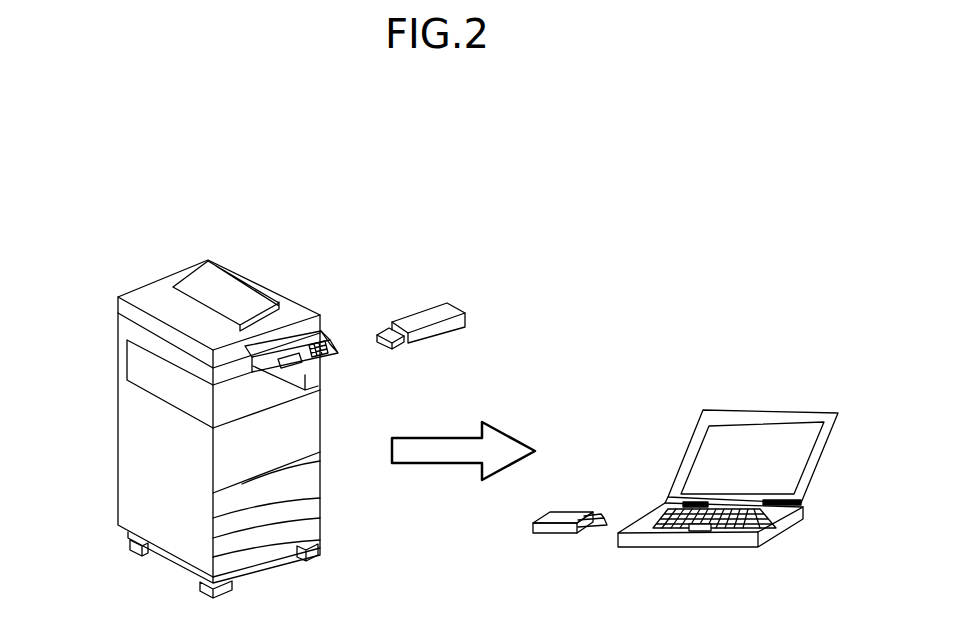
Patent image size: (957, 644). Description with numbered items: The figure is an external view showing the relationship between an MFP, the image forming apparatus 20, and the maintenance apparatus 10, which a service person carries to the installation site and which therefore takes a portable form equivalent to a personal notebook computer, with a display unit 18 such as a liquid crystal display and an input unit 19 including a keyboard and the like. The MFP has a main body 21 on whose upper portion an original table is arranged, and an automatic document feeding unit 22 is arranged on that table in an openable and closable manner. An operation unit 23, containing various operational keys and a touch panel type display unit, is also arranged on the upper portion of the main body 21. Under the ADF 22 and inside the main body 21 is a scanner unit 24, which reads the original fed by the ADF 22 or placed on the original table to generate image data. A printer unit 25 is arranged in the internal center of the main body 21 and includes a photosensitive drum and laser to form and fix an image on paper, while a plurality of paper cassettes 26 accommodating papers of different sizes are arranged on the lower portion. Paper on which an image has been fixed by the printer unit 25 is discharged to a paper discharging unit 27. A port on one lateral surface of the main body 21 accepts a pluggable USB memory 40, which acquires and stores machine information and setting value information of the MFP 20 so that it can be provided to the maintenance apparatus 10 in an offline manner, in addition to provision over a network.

The maintenance apparatus 10 is at (676, 444).
The display unit 18 is at (787, 463).
The input unit 19 is at (782, 524).
The image forming apparatus 20 is at (275, 271).
The main body 21 is at (117, 455).
The automatic document feeding unit (ADF) 22 is at (150, 297).
The operation unit 23 is at (327, 337).
The scanner unit 24 is at (183, 346).
The printer unit 25 is at (288, 427).
The paper cassettes 26 is at (293, 477).
The paper discharging unit 27 is at (183, 381).
The USB memory 40 is at (418, 311).